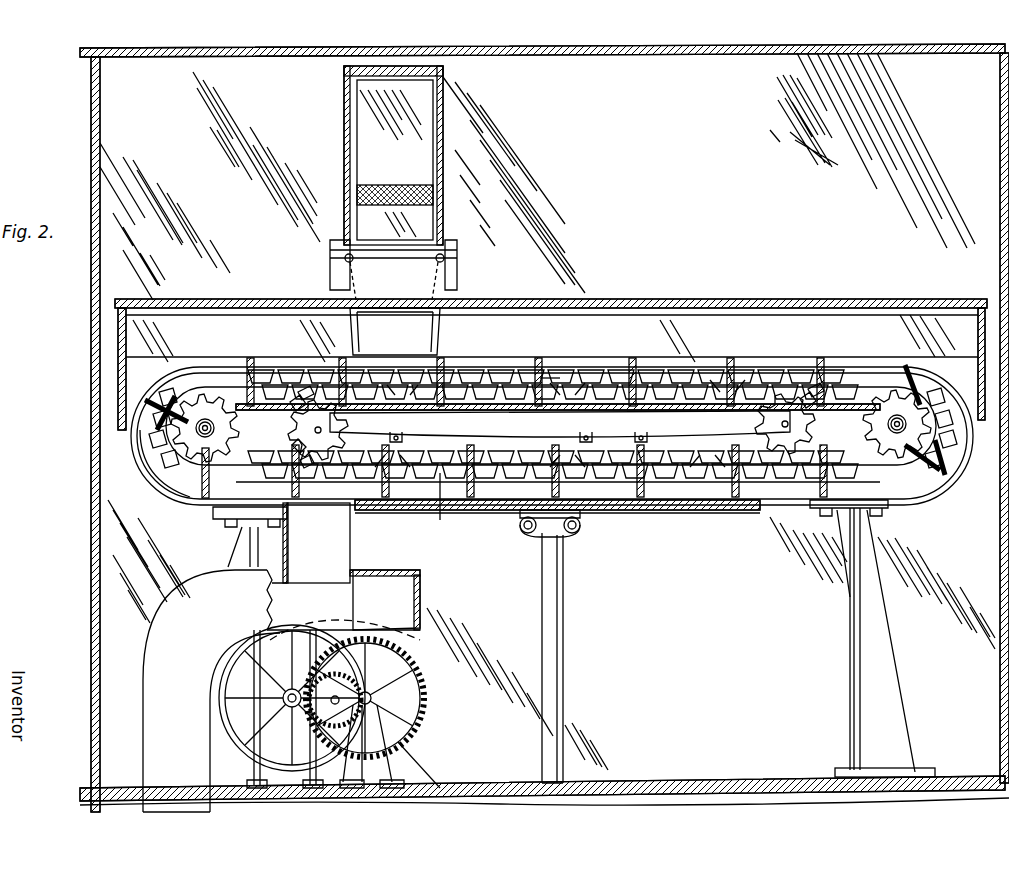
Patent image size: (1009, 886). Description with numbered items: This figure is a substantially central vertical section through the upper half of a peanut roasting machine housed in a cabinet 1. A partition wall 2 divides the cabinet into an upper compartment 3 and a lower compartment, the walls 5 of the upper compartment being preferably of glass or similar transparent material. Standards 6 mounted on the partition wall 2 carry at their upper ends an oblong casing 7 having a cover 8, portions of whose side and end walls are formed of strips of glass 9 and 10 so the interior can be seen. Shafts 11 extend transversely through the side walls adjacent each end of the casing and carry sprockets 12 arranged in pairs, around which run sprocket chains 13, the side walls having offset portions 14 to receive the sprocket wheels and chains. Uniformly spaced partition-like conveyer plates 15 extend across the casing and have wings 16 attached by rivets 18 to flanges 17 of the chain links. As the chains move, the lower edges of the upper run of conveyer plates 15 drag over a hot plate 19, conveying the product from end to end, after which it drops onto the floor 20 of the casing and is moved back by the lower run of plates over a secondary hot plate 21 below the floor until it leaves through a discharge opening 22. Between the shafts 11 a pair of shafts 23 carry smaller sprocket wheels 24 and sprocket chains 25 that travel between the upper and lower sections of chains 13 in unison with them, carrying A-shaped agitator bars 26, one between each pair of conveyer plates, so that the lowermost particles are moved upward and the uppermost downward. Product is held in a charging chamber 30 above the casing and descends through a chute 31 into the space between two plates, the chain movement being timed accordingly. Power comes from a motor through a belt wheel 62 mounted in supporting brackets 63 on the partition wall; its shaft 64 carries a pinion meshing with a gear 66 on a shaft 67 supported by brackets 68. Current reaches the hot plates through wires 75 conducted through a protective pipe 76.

The cabinet 1 is at (95, 680).
The partition wall 2 is at (722, 783).
The upper compartment 3 is at (642, 616).
The walls of the upper compartment 5 is at (96, 522).
The standards 6 is at (850, 662).
The casing 7 is at (132, 438).
The cover 8 is at (706, 300).
The strips of glass 9 is at (806, 318).
The strips of glass 10 is at (118, 333).
The shafts 11 is at (205, 424).
The sprockets 12 is at (222, 402).
The sprocket chains 13 is at (172, 388).
The offset portions 14 is at (150, 482).
The conveyer plates 15 is at (542, 358).
The wings 16 is at (562, 376).
The flanges 17 is at (438, 508).
The rivets 18 is at (443, 480).
The hot plate 19 is at (480, 415).
The floor 20 is at (787, 505).
The secondary hot plate 21 is at (692, 512).
The discharge opening 22 is at (335, 546).
The shafts 23 is at (553, 403).
The sprocket wheels 24 is at (342, 433).
The sprocket chains 25 is at (284, 449).
The agitator bars 26 is at (712, 388).
The charging chamber 30 is at (405, 126).
The chute 31 is at (395, 331).
The belt wheel 62 is at (400, 634).
The supporting brackets 63 is at (285, 742).
The shaft 64 is at (240, 698).
The gear 66 is at (425, 718).
The shaft 67 is at (330, 688).
The brackets 68 is at (380, 760).
The wires 75 is at (578, 520).
The pipe 76 is at (553, 653).